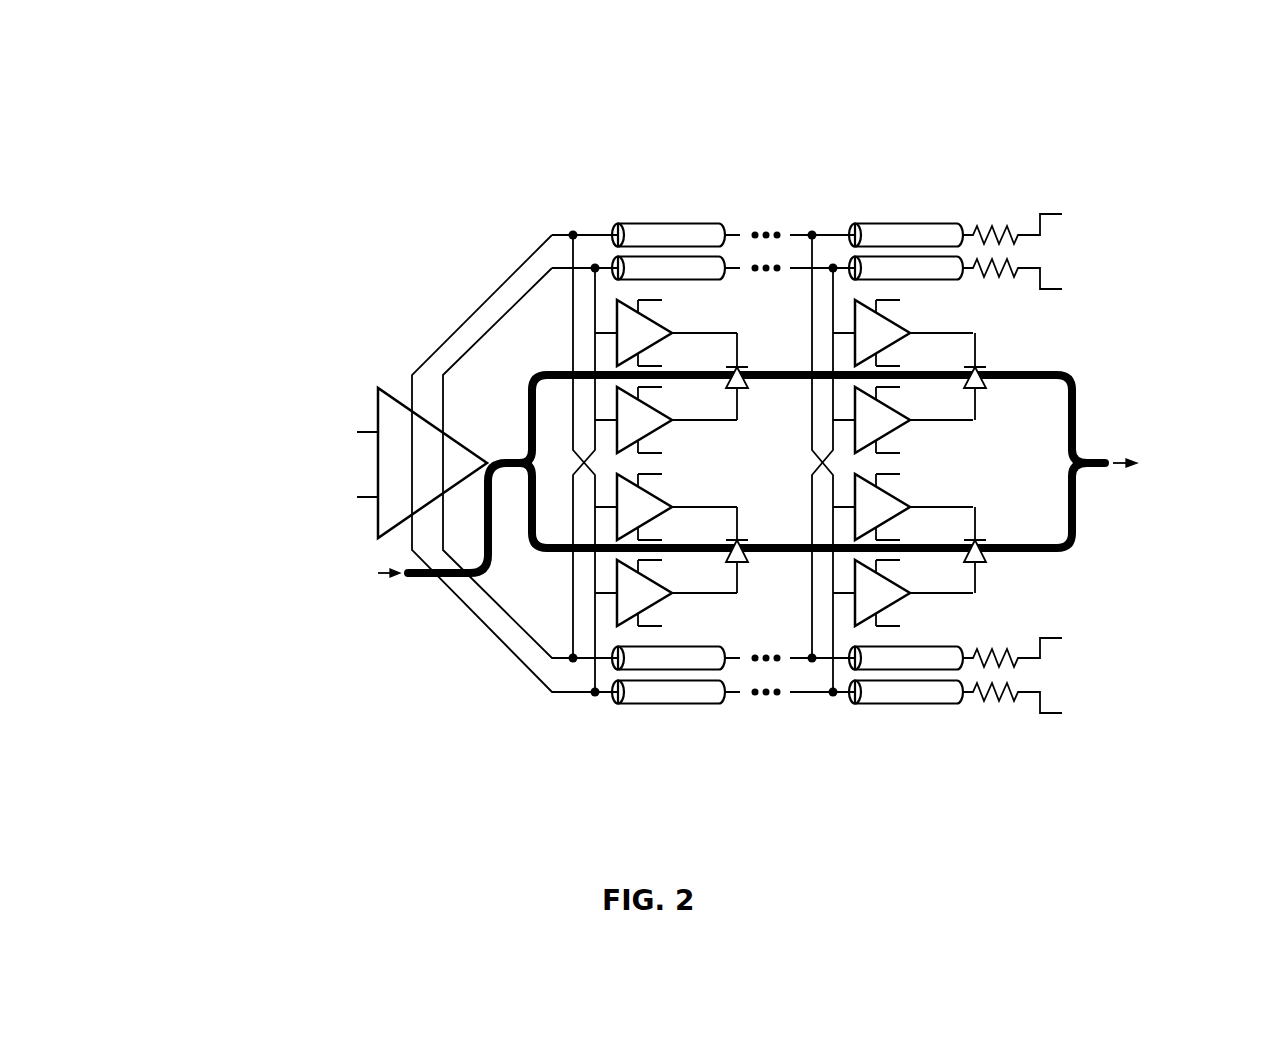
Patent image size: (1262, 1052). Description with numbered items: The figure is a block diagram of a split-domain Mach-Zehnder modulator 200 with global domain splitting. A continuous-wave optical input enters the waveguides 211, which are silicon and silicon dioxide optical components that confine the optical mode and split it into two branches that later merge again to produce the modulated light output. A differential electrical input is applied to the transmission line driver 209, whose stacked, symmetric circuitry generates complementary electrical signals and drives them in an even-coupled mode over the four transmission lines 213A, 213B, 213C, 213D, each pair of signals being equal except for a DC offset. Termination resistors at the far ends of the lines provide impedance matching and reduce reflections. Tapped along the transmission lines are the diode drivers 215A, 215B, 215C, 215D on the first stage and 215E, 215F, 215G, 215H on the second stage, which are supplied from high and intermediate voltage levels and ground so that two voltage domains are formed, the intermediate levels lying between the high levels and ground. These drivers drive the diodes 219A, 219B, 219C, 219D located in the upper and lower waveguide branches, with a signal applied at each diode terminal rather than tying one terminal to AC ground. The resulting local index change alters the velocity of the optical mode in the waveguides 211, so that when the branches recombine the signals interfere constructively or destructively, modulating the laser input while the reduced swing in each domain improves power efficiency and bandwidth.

The split-domain Mach-Zehnder modulator 200 is at (216, 93).
The transmission line driver 209 is at (422, 463).
The waveguides 211 is at (497, 461).
The transmission line 213A is at (641, 222).
The transmission line 213B is at (728, 257).
The transmission line 213C is at (728, 667).
The transmission line 213D is at (645, 705).
The diode driver 215A is at (666, 341).
The diode driver 215B is at (666, 422).
The diode driver 215C is at (666, 514).
The diode driver 215D is at (666, 601).
The diode driver 215E is at (903, 341).
The diode driver 215F is at (903, 422).
The diode driver 215G is at (903, 514).
The diode driver 215H is at (903, 601).
The diode 219A is at (741, 384).
The diode 219B is at (742, 560).
The diode 219C is at (980, 366).
The diode 219D is at (979, 562).